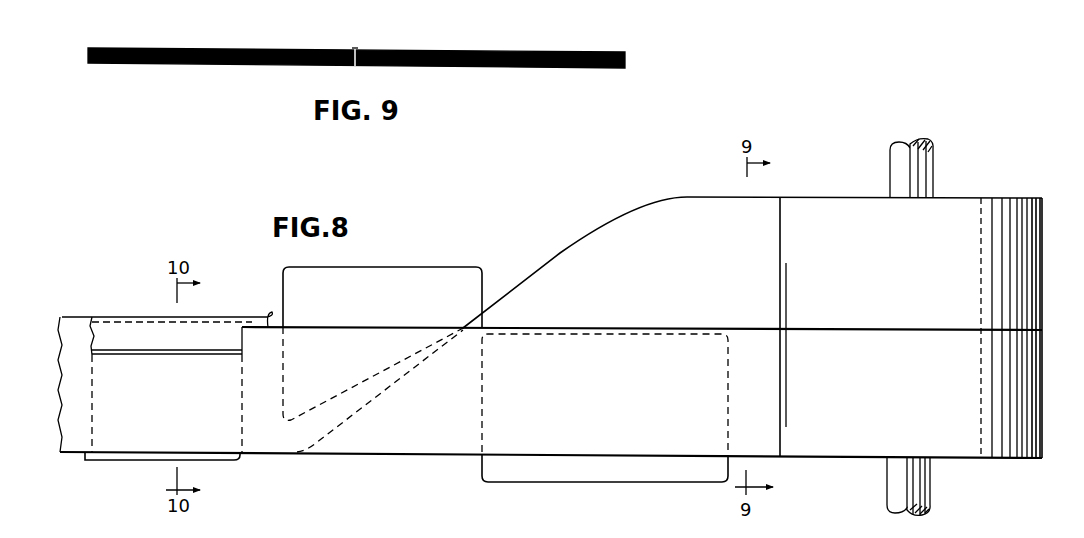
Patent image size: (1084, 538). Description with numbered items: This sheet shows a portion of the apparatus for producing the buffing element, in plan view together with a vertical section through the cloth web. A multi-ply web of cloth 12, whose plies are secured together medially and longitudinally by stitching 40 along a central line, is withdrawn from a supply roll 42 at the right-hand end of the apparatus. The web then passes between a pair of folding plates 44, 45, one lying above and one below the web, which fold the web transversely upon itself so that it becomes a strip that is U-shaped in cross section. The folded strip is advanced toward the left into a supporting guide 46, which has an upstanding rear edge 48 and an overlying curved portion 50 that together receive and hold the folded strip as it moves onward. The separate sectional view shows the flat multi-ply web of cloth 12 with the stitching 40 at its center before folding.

In FIG. 9, the multi-ply web of cloth 12 is at (470, 50).
In FIG. 8, the multi-ply web of cloth 12 is at (697, 202).
In FIG. 9, the stitching 40 is at (355, 48).
In FIG. 8, the stitching 40 is at (698, 328).
In FIG. 8, the supply roll 42 is at (997, 198).
In FIG. 8, the folding plate 44 is at (443, 267).
In FIG. 8, the folding plate 45 is at (585, 482).
In FIG. 8, the supporting guide 46 is at (125, 460).
In FIG. 8, the upstanding rear edge 48 is at (112, 317).
In FIG. 8, the overlying curved portion 50 is at (135, 338).